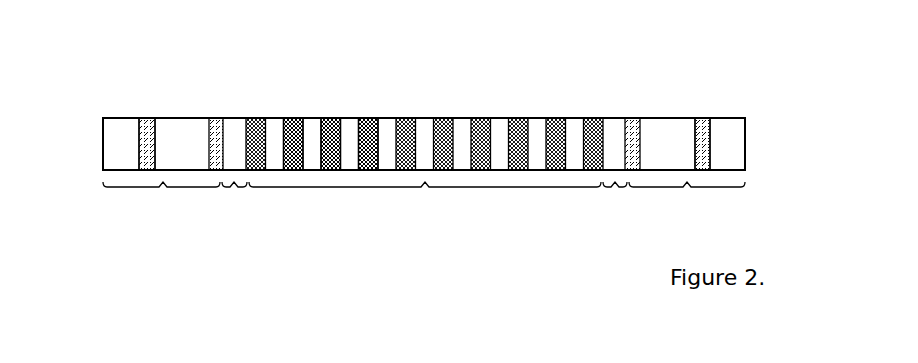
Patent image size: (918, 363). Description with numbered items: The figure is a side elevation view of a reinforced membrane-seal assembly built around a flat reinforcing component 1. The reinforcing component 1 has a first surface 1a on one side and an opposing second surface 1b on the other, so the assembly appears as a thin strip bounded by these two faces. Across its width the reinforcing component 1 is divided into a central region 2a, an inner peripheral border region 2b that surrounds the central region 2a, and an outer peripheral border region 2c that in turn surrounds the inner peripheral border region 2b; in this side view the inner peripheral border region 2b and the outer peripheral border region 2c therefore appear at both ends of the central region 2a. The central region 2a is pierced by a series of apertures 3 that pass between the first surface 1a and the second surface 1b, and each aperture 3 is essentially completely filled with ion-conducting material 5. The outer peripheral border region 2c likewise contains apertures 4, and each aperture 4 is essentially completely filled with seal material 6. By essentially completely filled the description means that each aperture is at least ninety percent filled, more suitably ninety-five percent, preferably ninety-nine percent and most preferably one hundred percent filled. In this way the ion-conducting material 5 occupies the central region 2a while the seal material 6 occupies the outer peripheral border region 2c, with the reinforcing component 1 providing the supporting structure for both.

The reinforcing component 1 is at (484, 144).
The first surface 1a is at (461, 83).
The second surface 1b is at (480, 197).
The central region 2a is at (425, 200).
The inner peripheral border region 2b is at (424, 200).
The outer peripheral border region 2c is at (424, 203).
The aperture 3 is at (301, 103).
The aperture 4 is at (382, 97).
The ion-conducting material 5 is at (301, 222).
The seal material 6 is at (380, 119).